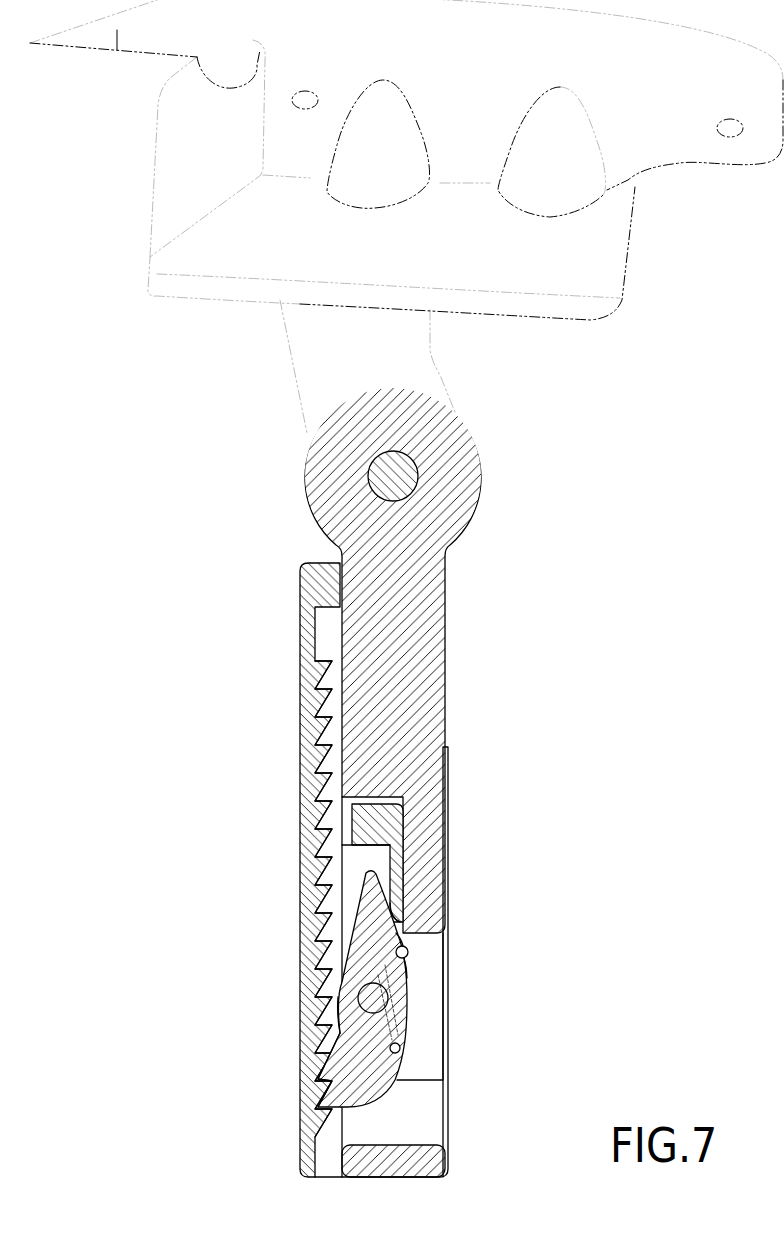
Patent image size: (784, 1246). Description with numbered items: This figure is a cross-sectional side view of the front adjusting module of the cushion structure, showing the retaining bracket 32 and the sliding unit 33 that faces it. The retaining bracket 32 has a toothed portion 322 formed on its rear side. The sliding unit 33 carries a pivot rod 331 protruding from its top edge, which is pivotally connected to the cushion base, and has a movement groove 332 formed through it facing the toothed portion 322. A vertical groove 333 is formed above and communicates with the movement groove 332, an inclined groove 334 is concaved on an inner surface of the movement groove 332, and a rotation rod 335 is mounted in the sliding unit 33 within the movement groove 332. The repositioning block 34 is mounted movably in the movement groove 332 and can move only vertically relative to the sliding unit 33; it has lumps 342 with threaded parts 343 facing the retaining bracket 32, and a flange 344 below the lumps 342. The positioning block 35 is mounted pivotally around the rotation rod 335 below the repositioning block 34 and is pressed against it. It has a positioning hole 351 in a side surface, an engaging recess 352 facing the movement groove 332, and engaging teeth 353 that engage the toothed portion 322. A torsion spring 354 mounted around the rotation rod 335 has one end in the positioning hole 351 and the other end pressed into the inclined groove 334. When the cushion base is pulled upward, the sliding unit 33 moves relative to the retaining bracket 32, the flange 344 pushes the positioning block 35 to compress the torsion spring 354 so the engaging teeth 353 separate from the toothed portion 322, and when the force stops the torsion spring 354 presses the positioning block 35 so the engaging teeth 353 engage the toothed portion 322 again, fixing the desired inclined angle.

The retaining bracket 32 is at (297, 600).
The toothed portion 322 is at (325, 663).
The sliding unit 33 is at (457, 673).
The pivot rod 331 is at (320, 478).
The movement groove 332 is at (425, 1008).
The vertical groove 333 is at (403, 941).
The inclined groove 334 is at (408, 953).
The repositioning block 34 is at (412, 812).
The lumps 342 is at (363, 828).
The threaded parts 343 is at (343, 813).
The flange 344 is at (383, 910).
The positioning block 35 is at (403, 1096).
The positioning hole 351 is at (400, 1046).
The engaging recess 352 is at (409, 958).
The engaging teeth 353 is at (320, 1083).
The torsion spring 354 is at (348, 1010).
The rotation rod 335 is at (365, 990).